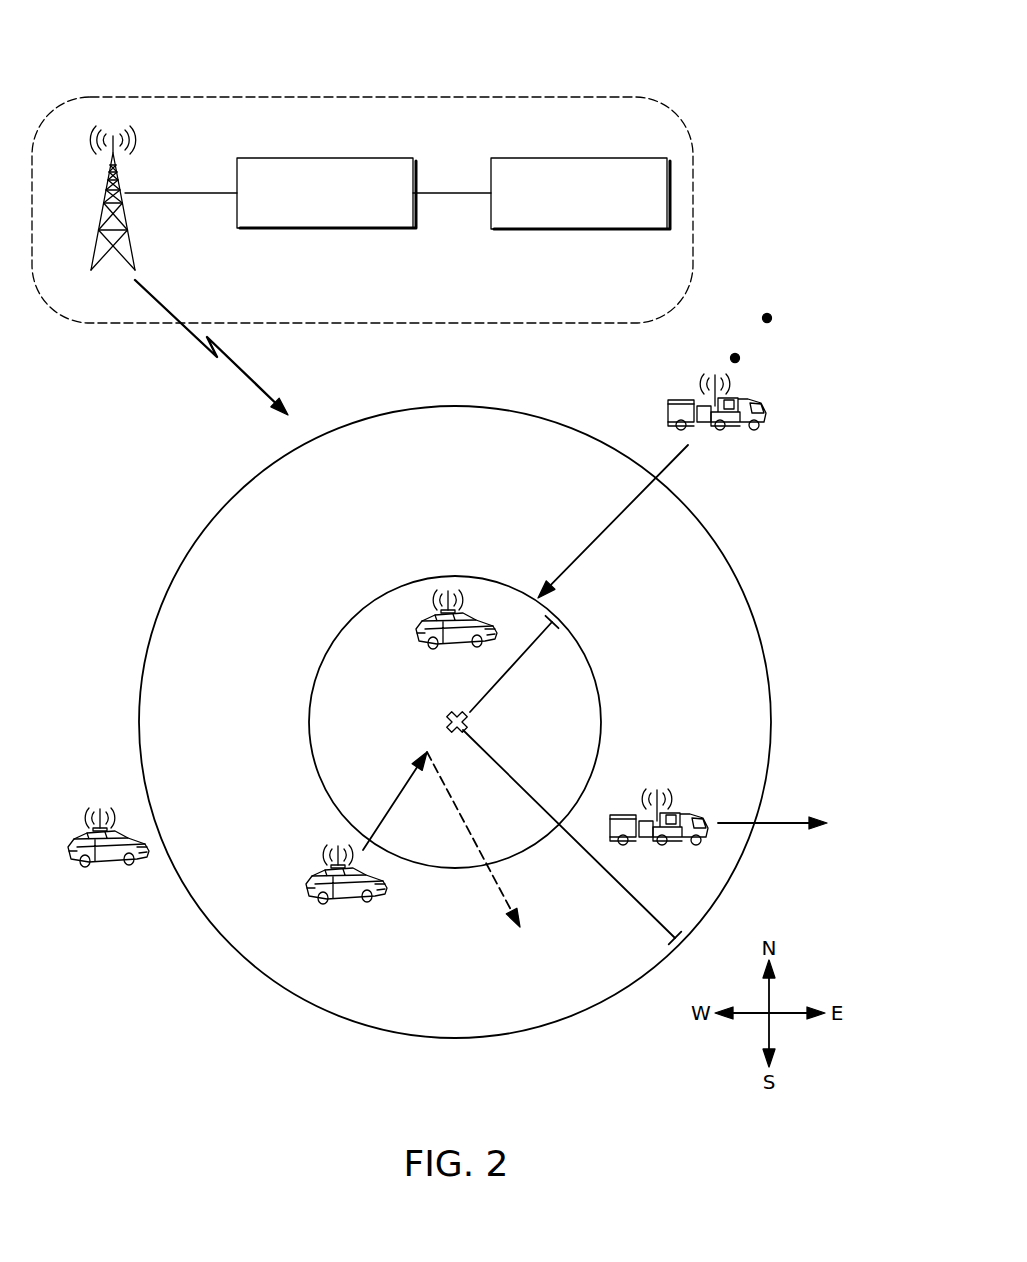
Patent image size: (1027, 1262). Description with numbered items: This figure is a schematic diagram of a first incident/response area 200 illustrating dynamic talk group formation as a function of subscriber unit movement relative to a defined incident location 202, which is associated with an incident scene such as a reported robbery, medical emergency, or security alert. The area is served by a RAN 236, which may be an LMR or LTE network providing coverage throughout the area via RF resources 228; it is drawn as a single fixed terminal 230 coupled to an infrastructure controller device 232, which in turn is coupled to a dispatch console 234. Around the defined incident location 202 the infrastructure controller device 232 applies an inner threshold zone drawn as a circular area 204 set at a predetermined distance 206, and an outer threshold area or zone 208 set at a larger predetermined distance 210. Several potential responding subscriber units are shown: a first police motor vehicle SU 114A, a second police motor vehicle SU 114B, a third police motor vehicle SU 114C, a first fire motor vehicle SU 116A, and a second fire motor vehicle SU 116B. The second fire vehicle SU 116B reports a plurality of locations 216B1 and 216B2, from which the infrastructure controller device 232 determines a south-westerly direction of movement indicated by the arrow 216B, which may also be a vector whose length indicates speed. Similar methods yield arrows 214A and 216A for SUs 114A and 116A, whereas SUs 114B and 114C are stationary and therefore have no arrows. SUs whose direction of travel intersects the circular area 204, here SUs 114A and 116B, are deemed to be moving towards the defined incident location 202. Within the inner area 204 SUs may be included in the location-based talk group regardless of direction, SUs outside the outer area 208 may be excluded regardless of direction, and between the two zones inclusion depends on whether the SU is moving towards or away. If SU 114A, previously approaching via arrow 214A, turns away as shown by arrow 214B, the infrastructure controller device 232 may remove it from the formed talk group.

The first incident/response area 200 is at (74, 38).
The RAN 236 is at (362, 97).
The fixed terminal 230 is at (102, 213).
The infrastructure controller device 232 is at (323, 158).
The dispatch console 234 is at (578, 158).
The RF resources 228 is at (242, 373).
The outer threshold area or zone 208 is at (758, 626).
The circular area 204 is at (602, 708).
The defined incident location 202 is at (445, 722).
The predetermined distance 206 is at (502, 680).
The predetermined distance 210 is at (622, 890).
The arrow 216B is at (598, 532).
The location 216B1 is at (772, 318).
The location 216B2 is at (741, 356).
The arrow 216A is at (783, 825).
The arrow 214A is at (398, 793).
The arrow 214B is at (463, 828).
The second fire motor vehicle potential responding SU 116B is at (682, 400).
The first fire motor vehicle potential responding SU 116A is at (622, 815).
The first police motor vehicle potential responding SU 114A is at (368, 898).
The second police motor vehicle potential responding SU 114B is at (436, 640).
The third police motor vehicle potential responding SU 114C is at (130, 866).